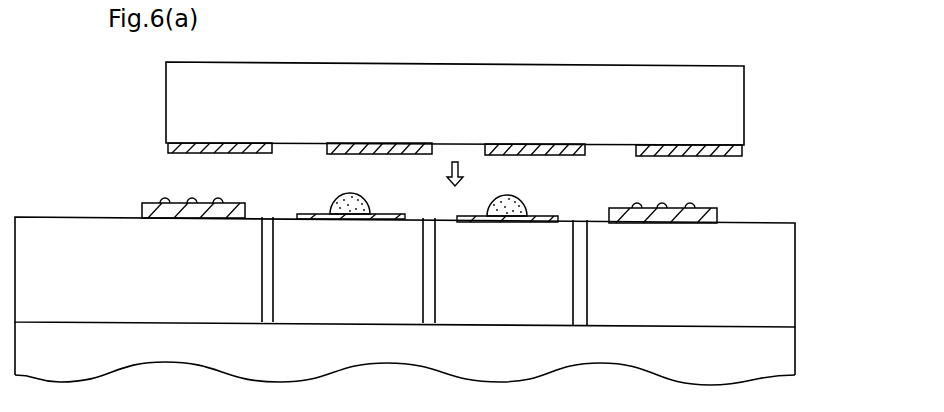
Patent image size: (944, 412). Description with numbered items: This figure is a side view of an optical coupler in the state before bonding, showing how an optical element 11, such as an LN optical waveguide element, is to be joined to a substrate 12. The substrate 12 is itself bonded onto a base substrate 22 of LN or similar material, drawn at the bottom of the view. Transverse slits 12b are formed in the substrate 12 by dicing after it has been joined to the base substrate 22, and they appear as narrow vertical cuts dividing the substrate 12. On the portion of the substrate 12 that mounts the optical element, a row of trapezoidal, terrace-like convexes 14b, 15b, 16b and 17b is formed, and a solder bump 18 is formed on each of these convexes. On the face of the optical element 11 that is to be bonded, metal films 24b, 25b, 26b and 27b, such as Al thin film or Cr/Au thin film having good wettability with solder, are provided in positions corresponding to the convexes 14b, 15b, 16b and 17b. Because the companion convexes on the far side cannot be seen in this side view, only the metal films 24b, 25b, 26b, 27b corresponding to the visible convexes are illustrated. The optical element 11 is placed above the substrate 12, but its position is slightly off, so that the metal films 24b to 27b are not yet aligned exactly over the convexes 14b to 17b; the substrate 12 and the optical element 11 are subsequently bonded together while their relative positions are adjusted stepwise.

The optical element 11 is at (645, 72).
The metal film 24b is at (183, 150).
The metal film 25b is at (327, 146).
The metal film 26b is at (580, 153).
The metal film 27b is at (737, 154).
The transverse slit 12b is at (588, 265).
The substrate 12 is at (716, 318).
The base substrate 22 is at (777, 346).
The trapezoidal convex 14b is at (145, 203).
The trapezoidal convex 15b is at (312, 214).
The solder bump 18 is at (366, 204).
The trapezoidal convex 16b is at (545, 218).
The trapezoidal convex 17b is at (710, 212).